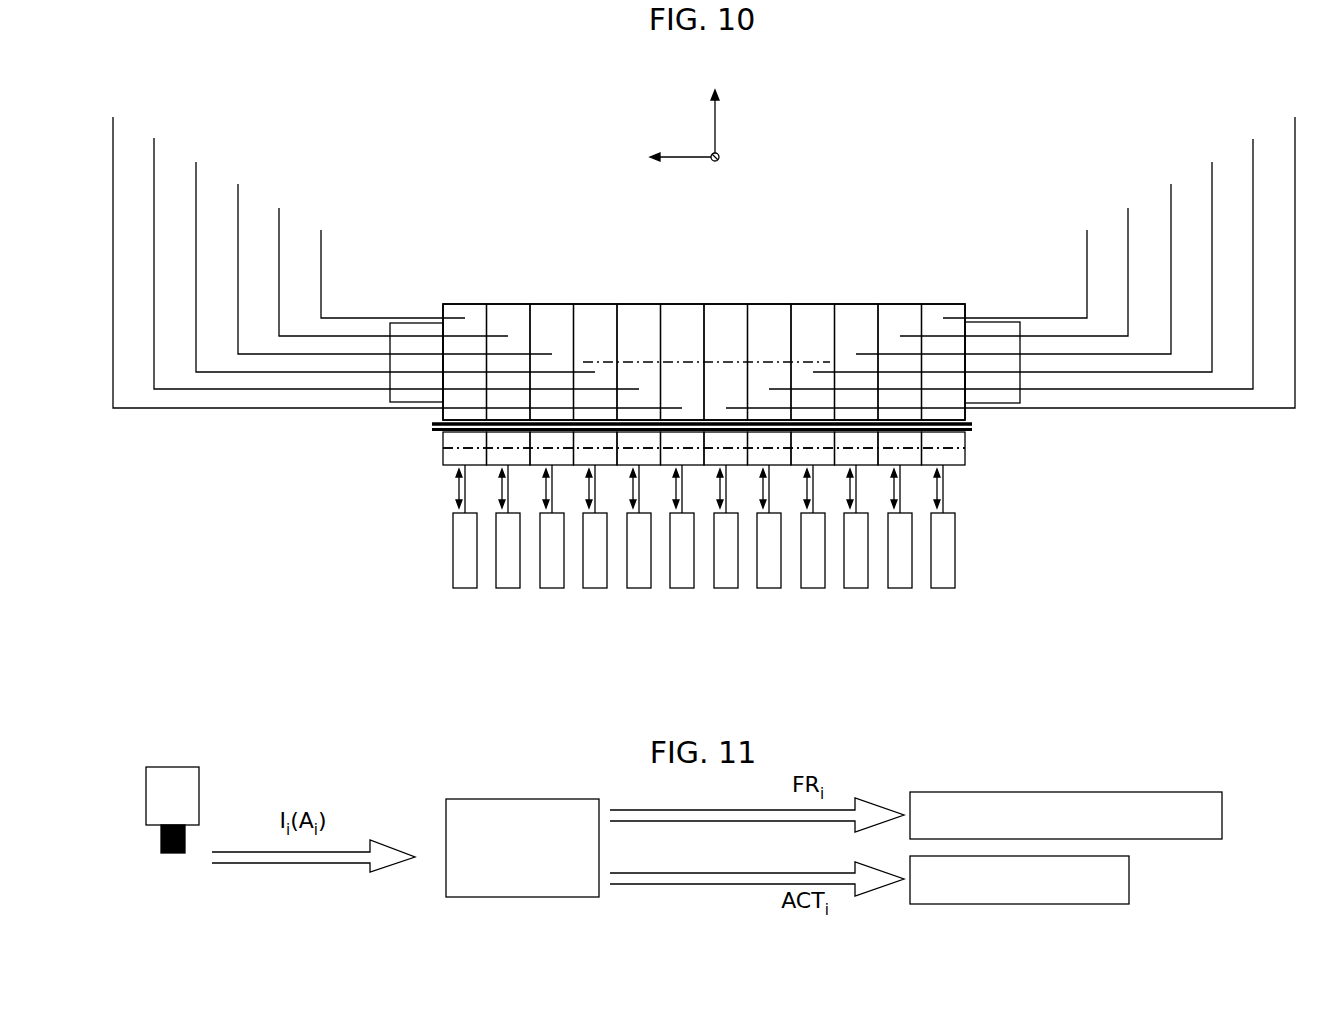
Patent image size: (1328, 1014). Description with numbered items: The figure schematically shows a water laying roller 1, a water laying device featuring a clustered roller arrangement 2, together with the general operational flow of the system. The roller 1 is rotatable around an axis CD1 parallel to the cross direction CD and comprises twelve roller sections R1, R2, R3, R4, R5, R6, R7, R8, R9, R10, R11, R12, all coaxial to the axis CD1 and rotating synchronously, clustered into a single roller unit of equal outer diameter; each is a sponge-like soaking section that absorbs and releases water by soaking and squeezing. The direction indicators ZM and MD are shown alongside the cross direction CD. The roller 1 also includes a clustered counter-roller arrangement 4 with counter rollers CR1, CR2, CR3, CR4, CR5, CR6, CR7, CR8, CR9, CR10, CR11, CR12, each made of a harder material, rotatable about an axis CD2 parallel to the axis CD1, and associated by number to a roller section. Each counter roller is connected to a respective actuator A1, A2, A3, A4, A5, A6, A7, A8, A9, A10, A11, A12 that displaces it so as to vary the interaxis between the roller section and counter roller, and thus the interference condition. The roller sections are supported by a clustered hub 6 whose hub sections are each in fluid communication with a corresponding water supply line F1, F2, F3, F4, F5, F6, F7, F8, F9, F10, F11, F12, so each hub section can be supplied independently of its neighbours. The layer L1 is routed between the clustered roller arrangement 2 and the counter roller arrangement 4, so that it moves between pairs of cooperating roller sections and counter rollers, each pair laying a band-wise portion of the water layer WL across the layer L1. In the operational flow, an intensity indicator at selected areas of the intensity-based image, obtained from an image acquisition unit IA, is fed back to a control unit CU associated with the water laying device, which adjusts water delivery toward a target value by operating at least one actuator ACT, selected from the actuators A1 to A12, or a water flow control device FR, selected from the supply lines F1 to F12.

In FIG. 10, the water laying roller 1 is at (886, 186).
In FIG. 10, the clustered roller arrangement 2 is at (966, 290).
In FIG. 10, the clustered counter-roller arrangement 4 is at (978, 442).
In FIG. 10, the clustered hub 6 is at (383, 346).
In FIG. 10, the water supply line F1 is at (391, 250).
In FIG. 10, the water supply line F2 is at (390, 252).
In FIG. 10, the water supply line F3 is at (389, 254).
In FIG. 10, the water supply line F4 is at (389, 257).
In FIG. 10, the water supply line F5 is at (387, 259).
In FIG. 10, the water supply line F6 is at (387, 262).
In FIG. 10, the water supply line F7 is at (1022, 262).
In FIG. 10, the water supply line F8 is at (1021, 259).
In FIG. 10, the water supply line F9 is at (1020, 257).
In FIG. 10, the water supply line F10 is at (1023, 254).
In FIG. 10, the water supply line F11 is at (1022, 252).
In FIG. 10, the water supply line F12 is at (1021, 250).
In FIG. 10, the roller section R1 is at (684, 304).
In FIG. 10, the roller section R2 is at (641, 304).
In FIG. 10, the roller section R3 is at (597, 304).
In FIG. 10, the roller section R4 is at (554, 304).
In FIG. 10, the roller section R5 is at (510, 304).
In FIG. 10, the roller section R6 is at (467, 304).
In FIG. 10, the roller section R7 is at (945, 304).
In FIG. 10, the roller section R8 is at (902, 304).
In FIG. 10, the roller section R9 is at (858, 304).
In FIG. 10, the roller section R10 is at (815, 304).
In FIG. 10, the roller section R11 is at (771, 304).
In FIG. 10, the roller section R12 is at (728, 304).
In FIG. 10, the actuator A1 is at (686, 584).
In FIG. 10, the actuator A2 is at (643, 584).
In FIG. 10, the actuator A3 is at (599, 584).
In FIG. 10, the actuator A4 is at (556, 584).
In FIG. 10, the actuator A5 is at (512, 584).
In FIG. 10, the actuator A6 is at (469, 584).
In FIG. 10, the actuator A7 is at (947, 584).
In FIG. 10, the actuator A8 is at (904, 584).
In FIG. 10, the actuator A9 is at (860, 584).
In FIG. 10, the actuator A10 is at (817, 584).
In FIG. 10, the actuator A11 is at (773, 584).
In FIG. 10, the actuator A12 is at (730, 584).
In FIG. 10, the counter roller CR1 is at (670, 455).
In FIG. 10, the counter roller CR2 is at (627, 455).
In FIG. 10, the counter roller CR3 is at (583, 455).
In FIG. 10, the counter roller CR4 is at (540, 455).
In FIG. 10, the counter roller CR5 is at (496, 455).
In FIG. 10, the counter roller CR6 is at (452, 466).
In FIG. 10, the counter roller CR7 is at (958, 469).
In FIG. 10, the counter roller CR8 is at (888, 455).
In FIG. 10, the counter roller CR9 is at (844, 455).
In FIG. 10, the counter roller CR10 is at (801, 455).
In FIG. 10, the counter roller CR11 is at (757, 455).
In FIG. 10, the counter roller CR12 is at (714, 455).
In FIG. 10, the water layer WL is at (433, 425).
In FIG. 10, the layer L1 is at (433, 447).
In FIG. 10, the axis CD1 is at (683, 355).
In FIG. 10, the axis CD2 is at (955, 470).
In FIG. 10, the z axis ZM is at (718, 108).
In FIG. 10, the cross direction CD is at (673, 144).
In FIG. 10, the machine direction MD is at (719, 160).
In FIG. 11, the image acquisition device IA is at (173, 778).
In FIG. 11, the control unit CU is at (500, 808).
In FIG. 11, the water flow control device FR is at (1065, 808).
In FIG. 11, the actuator ACT is at (1108, 875).